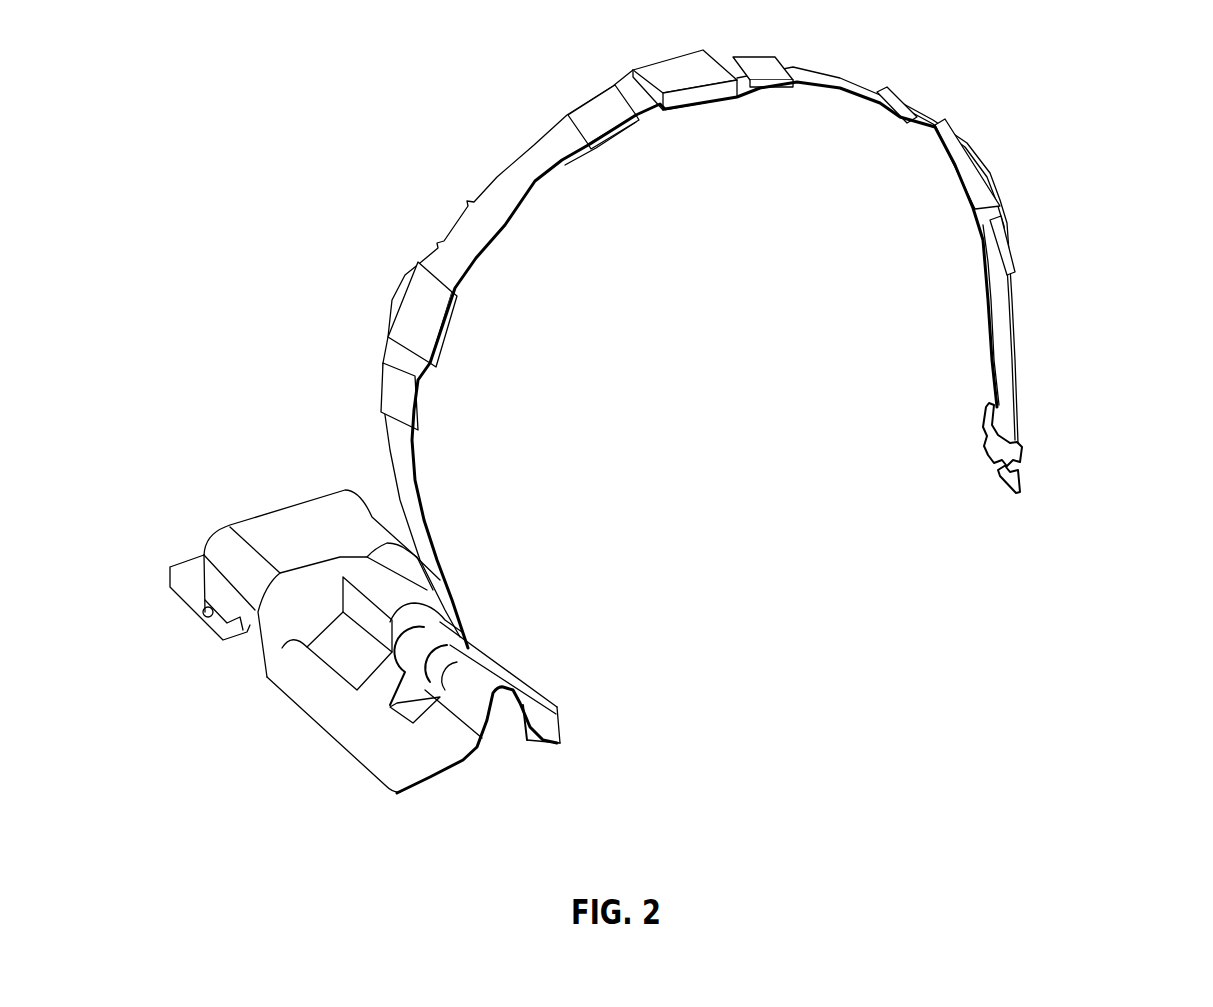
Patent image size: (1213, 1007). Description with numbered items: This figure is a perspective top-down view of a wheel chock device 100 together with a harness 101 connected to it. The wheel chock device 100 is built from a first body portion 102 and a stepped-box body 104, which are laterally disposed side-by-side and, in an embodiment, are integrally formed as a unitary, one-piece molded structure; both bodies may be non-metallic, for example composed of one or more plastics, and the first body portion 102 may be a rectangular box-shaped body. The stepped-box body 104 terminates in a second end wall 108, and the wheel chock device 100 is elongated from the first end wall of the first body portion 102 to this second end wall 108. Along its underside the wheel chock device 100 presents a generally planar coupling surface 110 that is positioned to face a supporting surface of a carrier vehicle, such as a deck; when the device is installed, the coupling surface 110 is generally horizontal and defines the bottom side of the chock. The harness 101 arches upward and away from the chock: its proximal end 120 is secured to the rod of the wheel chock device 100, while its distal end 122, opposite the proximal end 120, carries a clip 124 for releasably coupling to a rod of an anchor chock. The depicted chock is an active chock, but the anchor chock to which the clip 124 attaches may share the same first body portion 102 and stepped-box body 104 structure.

The wheel chock device 100 is at (275, 198).
The harness 101 is at (522, 177).
The first body portion 102 is at (350, 480).
The stepped-box body 104 is at (447, 538).
The second end wall 108 is at (507, 727).
The coupling surface 110 is at (413, 793).
The proximal end 120 is at (408, 679).
The distal end 122 is at (1042, 437).
The clip 124 is at (1025, 458).